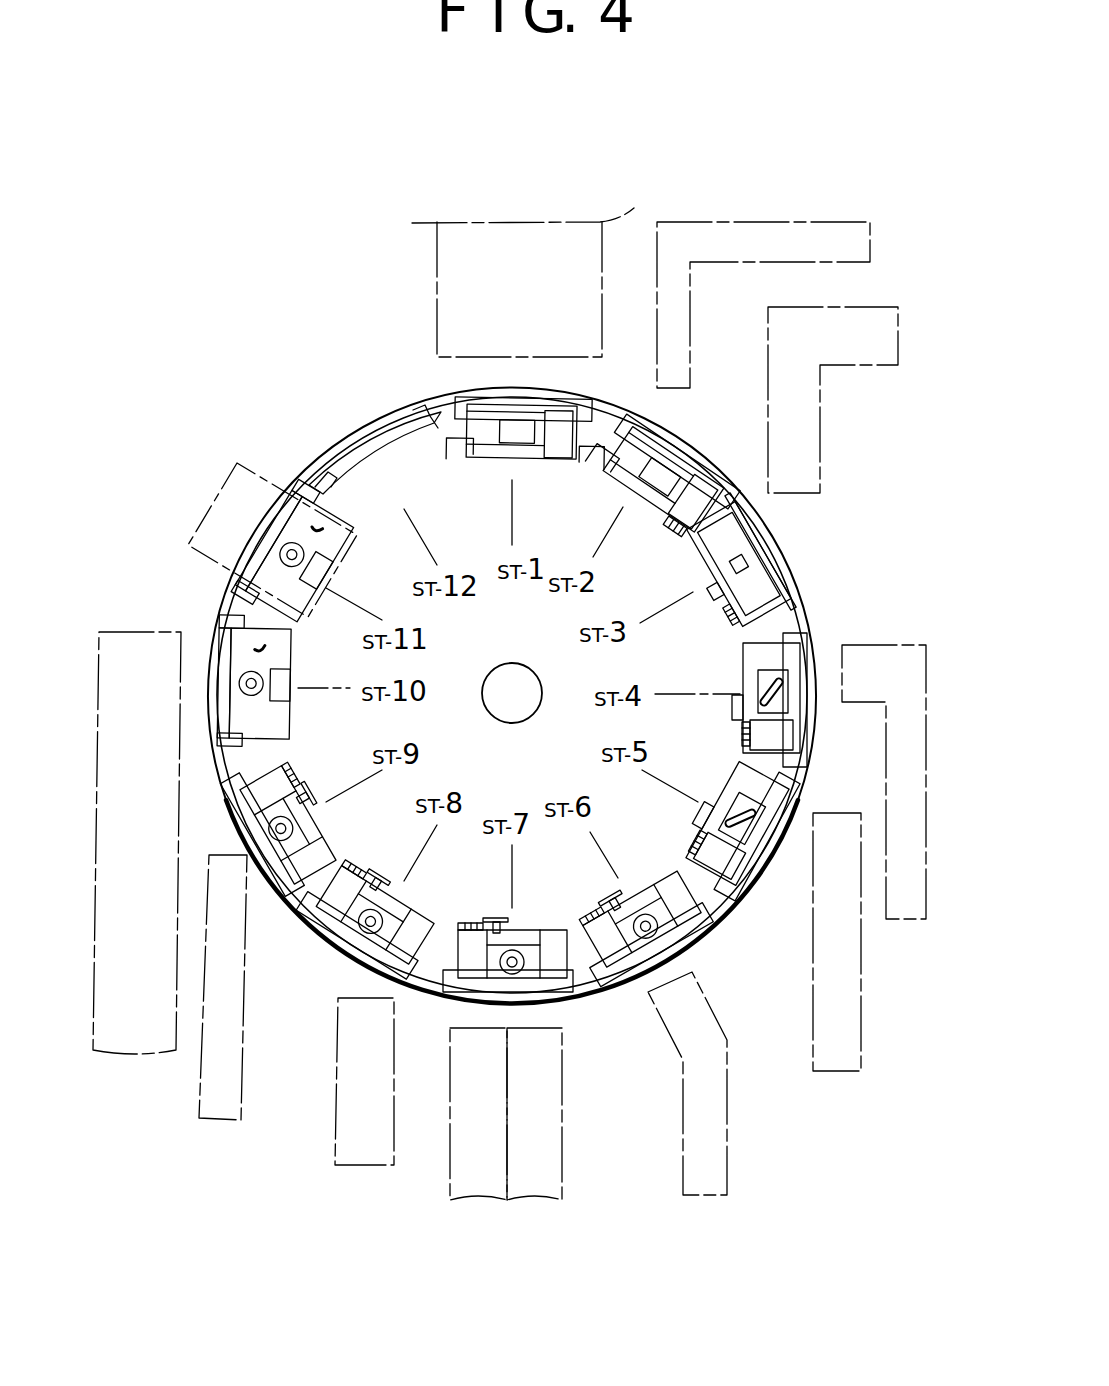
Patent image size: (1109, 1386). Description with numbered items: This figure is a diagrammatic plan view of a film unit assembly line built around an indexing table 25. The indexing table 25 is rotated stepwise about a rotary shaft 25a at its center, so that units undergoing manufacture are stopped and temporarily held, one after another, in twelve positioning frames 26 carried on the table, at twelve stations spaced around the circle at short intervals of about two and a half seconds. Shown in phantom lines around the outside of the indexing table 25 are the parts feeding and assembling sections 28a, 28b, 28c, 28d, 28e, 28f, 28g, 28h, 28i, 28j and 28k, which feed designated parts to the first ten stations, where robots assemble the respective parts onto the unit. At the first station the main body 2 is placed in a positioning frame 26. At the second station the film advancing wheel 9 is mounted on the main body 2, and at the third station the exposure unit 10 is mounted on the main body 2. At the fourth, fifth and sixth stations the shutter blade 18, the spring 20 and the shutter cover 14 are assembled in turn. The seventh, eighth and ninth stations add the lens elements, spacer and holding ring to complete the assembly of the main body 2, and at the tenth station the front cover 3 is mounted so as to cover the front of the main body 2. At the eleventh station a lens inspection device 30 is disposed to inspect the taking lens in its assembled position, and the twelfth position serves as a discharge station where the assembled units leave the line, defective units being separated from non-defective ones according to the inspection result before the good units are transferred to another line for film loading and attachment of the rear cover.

The main body 2 is at (548, 407).
The front cover 3 is at (292, 716).
The film advancing wheel 9 is at (664, 508).
The exposure unit 10 is at (742, 567).
The shutter cover 14 is at (698, 942).
The shutter blade 18 is at (782, 693).
The spring 20 is at (692, 828).
The indexing table 25 is at (418, 400).
The rotary shaft 25a is at (517, 676).
The positioning frame 26 is at (347, 497).
The parts feeding and assembling section 28a is at (437, 260).
The parts feeding and assembling section 28b is at (682, 222).
The parts feeding and assembling section 28c is at (820, 405).
The parts feeding and assembling section 28d is at (850, 643).
The parts feeding and assembling section 28e is at (861, 1020).
The parts feeding and assembling section 28f is at (728, 1150).
The parts feeding and assembling section 28g is at (562, 1138).
The parts feeding and assembling section 28h is at (449, 1161).
The parts feeding and assembling section 28i is at (340, 1040).
The parts feeding and assembling section 28j is at (246, 985).
The parts feeding and assembling section 28k is at (152, 630).
The lens inspection device 30 is at (228, 525).